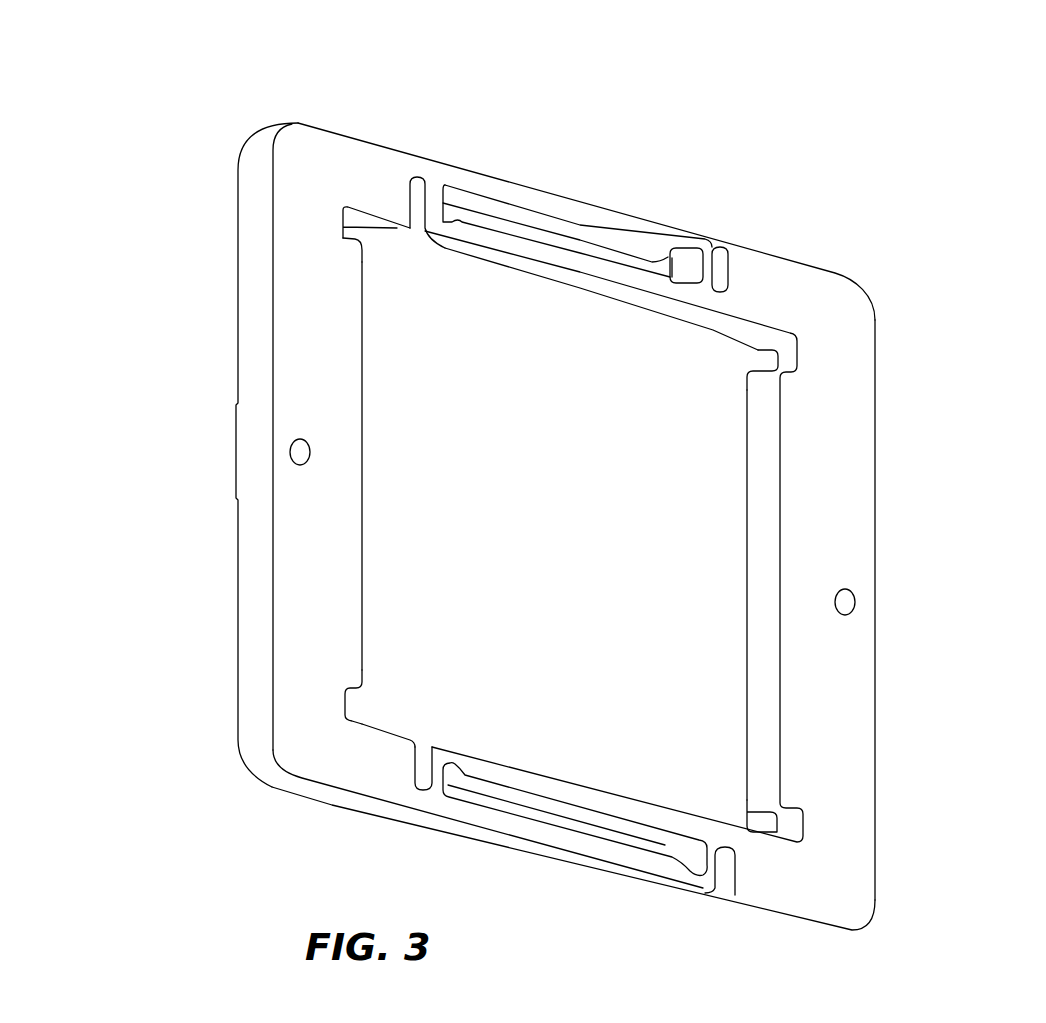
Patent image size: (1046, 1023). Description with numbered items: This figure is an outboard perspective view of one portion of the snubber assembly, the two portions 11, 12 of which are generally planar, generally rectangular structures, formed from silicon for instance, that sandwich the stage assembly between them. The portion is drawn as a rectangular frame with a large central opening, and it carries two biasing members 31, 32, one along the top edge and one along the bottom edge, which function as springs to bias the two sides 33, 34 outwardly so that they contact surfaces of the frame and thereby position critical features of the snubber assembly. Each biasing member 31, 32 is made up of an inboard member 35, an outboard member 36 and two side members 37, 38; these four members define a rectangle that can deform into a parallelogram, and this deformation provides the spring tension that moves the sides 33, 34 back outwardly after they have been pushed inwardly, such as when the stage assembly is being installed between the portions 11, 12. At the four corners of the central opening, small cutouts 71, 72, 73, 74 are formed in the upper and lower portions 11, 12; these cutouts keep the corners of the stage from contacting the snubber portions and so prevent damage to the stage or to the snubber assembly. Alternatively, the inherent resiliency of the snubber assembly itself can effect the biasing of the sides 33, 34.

The upper portion 11 is at (495, 540).
The lower portion 12 is at (517, 540).
The biasing member 31 is at (600, 146).
The biasing member 32 is at (610, 902).
The side 33 is at (292, 335).
The side 34 is at (832, 672).
The inboard member 35 is at (600, 268).
The outboard member 36 is at (503, 190).
The side member 37 is at (430, 203).
The side member 38 is at (710, 270).
The cutout 71 is at (367, 237).
The cutout 72 is at (783, 353).
The cutout 73 is at (347, 703).
The cutout 74 is at (777, 827).